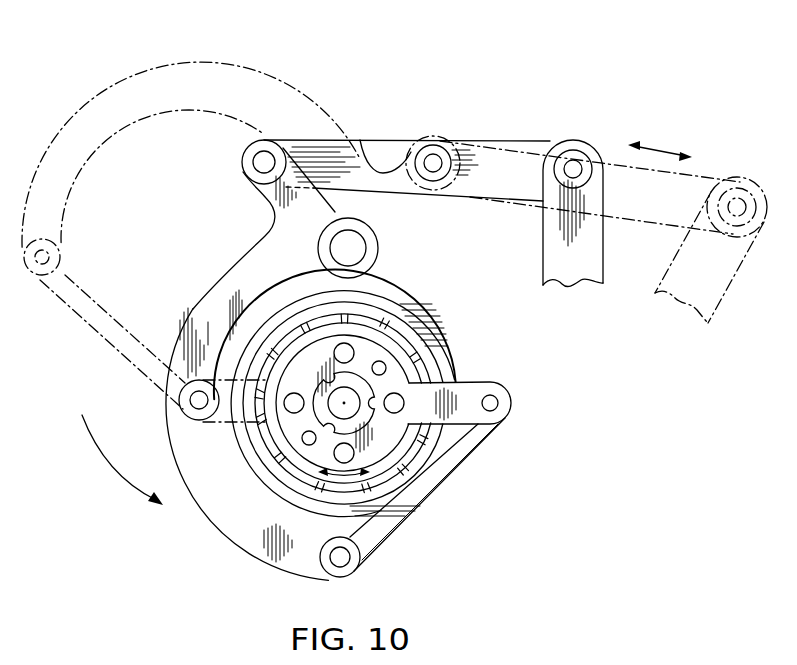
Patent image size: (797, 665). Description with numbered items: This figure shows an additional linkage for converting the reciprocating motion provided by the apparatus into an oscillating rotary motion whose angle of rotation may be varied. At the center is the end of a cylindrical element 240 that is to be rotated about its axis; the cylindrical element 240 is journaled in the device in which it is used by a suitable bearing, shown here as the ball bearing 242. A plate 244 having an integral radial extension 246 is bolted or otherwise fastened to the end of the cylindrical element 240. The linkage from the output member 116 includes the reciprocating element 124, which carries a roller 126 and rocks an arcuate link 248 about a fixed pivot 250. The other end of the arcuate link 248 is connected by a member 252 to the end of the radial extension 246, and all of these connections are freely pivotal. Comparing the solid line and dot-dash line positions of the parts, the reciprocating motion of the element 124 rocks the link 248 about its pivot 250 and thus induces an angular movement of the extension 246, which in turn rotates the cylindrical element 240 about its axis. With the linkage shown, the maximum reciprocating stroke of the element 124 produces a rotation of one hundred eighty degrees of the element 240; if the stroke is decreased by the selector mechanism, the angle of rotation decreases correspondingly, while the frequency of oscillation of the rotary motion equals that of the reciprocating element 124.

The output member 116 is at (705, 264).
The reciprocating element 124 is at (528, 168).
The roller pin 126 is at (733, 207).
The cylindrical element 240 is at (440, 372).
The ball bearing 242 is at (412, 378).
The plate 244 is at (293, 437).
The radial extension 246 is at (468, 382).
The arcuate link 248 is at (218, 76).
The fixed pivot 250 is at (355, 252).
The member 252 is at (427, 497).